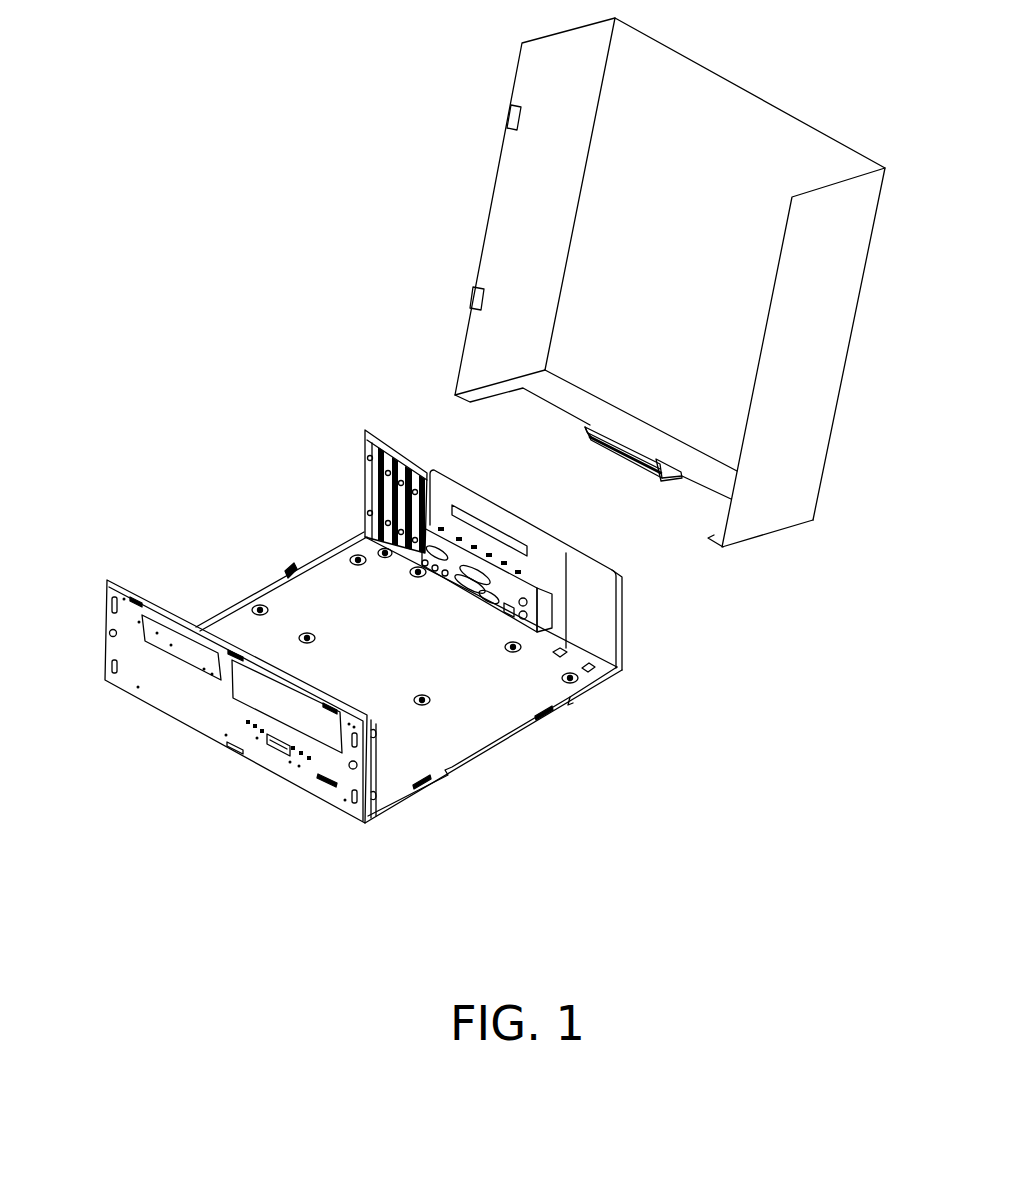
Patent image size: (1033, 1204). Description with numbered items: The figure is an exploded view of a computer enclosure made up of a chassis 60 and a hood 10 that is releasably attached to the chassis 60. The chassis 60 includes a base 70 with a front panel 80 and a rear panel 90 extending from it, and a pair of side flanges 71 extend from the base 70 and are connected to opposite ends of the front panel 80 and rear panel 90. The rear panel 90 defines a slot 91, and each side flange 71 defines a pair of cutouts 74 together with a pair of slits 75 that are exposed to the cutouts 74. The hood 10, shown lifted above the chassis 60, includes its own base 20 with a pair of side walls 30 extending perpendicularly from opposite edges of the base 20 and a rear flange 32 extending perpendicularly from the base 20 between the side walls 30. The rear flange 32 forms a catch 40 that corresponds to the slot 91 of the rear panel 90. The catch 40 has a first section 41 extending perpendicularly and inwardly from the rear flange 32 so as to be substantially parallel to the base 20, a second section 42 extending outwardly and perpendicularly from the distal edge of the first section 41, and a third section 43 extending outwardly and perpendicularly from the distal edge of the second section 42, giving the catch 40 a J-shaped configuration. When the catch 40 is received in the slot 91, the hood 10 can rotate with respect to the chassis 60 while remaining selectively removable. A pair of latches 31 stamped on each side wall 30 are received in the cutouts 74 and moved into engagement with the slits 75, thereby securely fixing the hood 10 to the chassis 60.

The hood 10 is at (704, 58).
The base 20 is at (743, 162).
The side wall 30 is at (525, 200).
The latch 31 is at (521, 124).
The rear flange 32 is at (560, 395).
The catch 40 is at (589, 451).
The first section 41 is at (658, 482).
The second section 42 is at (658, 462).
The third section 43 is at (643, 471).
The chassis 60 is at (330, 532).
The base 70 is at (307, 605).
The side flange 71 is at (508, 738).
The cutout 74 is at (573, 703).
The slit 75 is at (547, 719).
The front panel 80 is at (183, 692).
The rear panel 90 is at (545, 557).
The slot 91 is at (495, 533).